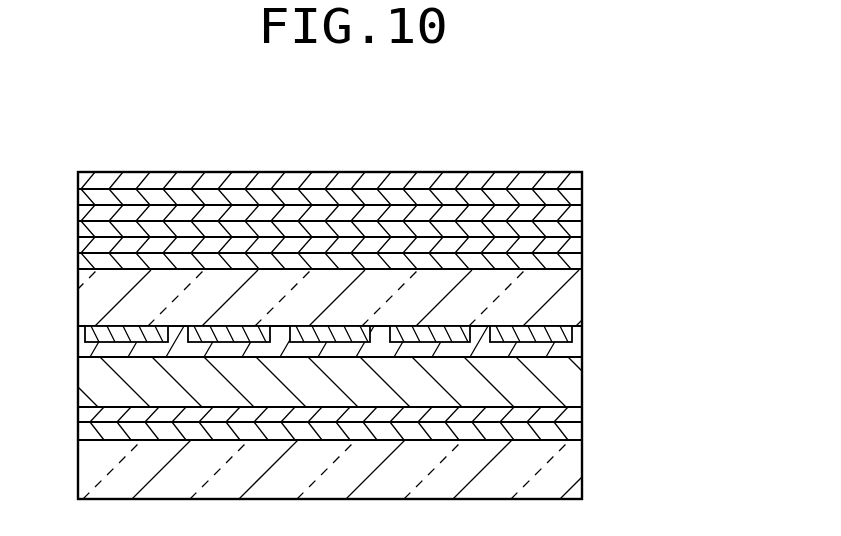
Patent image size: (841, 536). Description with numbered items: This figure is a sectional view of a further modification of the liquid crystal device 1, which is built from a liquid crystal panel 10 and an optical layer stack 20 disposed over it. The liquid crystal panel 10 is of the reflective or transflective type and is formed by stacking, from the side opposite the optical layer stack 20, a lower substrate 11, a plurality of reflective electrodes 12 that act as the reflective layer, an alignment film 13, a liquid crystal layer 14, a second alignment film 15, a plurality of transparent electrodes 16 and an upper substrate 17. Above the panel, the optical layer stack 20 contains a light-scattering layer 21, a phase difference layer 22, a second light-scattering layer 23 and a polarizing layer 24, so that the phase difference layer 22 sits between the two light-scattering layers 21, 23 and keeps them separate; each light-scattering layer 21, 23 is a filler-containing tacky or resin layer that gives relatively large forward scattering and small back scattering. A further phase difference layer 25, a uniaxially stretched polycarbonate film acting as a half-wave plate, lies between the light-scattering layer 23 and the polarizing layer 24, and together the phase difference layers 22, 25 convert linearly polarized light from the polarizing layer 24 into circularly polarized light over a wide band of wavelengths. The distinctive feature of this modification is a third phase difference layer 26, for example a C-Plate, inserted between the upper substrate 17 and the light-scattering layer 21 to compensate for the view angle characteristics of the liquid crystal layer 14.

The liquid crystal device 1 is at (572, 122).
The liquid crystal panel 10 is at (647, 297).
The lower substrate 11 is at (573, 468).
The reflective electrodes 12 is at (575, 433).
The alignment film 13 is at (572, 412).
The liquid crystal layer 14 is at (565, 385).
The alignment film 15 is at (575, 348).
The transparent electrodes 16 is at (575, 335).
The upper substrate 17 is at (575, 300).
The optical layer stack 20 is at (647, 137).
The light-scattering layer 21 is at (572, 240).
The phase difference layer 22 is at (570, 222).
The light-scattering layer 23 is at (572, 206).
The polarizing layer 24 is at (562, 176).
The phase difference layer 25 is at (568, 187).
The phase difference layer 26 is at (573, 262).